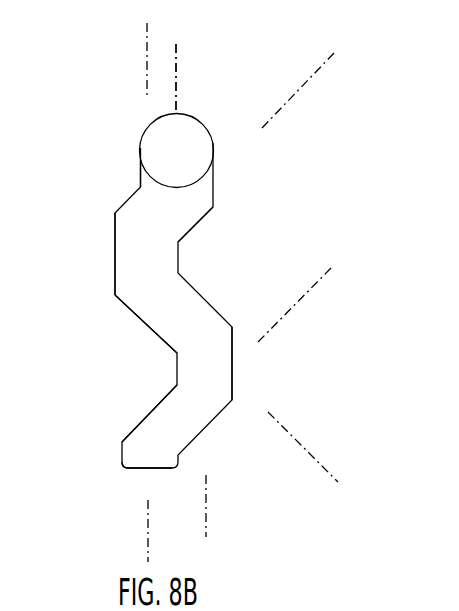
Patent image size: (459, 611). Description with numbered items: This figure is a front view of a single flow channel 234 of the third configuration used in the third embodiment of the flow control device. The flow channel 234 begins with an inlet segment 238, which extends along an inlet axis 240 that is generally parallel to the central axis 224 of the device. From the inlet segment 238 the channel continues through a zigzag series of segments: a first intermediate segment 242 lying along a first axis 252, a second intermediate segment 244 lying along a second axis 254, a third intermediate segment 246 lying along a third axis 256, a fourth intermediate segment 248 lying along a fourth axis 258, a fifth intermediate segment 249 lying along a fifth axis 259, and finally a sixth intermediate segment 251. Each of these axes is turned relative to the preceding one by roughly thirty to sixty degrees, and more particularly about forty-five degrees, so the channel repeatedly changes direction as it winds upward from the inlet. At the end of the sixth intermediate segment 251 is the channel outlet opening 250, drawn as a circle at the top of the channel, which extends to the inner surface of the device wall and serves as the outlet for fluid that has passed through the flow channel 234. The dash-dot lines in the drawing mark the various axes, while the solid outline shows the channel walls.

The central axis 224 is at (178, 60).
The flow channel 234 is at (208, 104).
The inlet segment 238 is at (138, 463).
The inlet axis 240 is at (145, 540).
The first intermediate segment 242 is at (153, 425).
The second intermediate segment 244 is at (225, 373).
The third intermediate segment 246 is at (153, 315).
The fourth intermediate segment 248 is at (128, 268).
The fifth intermediate segment 249 is at (190, 220).
The channel outlet opening 250 is at (155, 147).
The sixth intermediate segment 251 is at (148, 182).
The first axis 252 is at (300, 298).
The second axis 254 is at (208, 505).
The third axis 256 is at (300, 442).
The fourth axis 258 is at (145, 40).
The fifth axis 259 is at (300, 88).